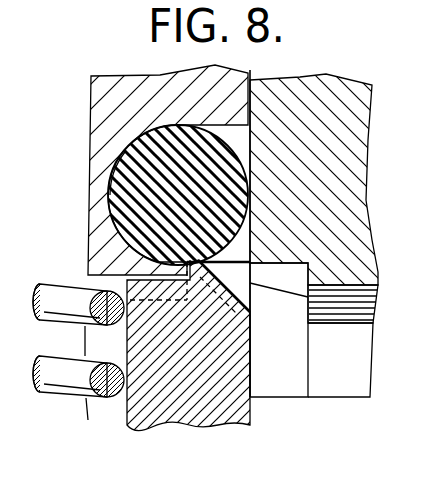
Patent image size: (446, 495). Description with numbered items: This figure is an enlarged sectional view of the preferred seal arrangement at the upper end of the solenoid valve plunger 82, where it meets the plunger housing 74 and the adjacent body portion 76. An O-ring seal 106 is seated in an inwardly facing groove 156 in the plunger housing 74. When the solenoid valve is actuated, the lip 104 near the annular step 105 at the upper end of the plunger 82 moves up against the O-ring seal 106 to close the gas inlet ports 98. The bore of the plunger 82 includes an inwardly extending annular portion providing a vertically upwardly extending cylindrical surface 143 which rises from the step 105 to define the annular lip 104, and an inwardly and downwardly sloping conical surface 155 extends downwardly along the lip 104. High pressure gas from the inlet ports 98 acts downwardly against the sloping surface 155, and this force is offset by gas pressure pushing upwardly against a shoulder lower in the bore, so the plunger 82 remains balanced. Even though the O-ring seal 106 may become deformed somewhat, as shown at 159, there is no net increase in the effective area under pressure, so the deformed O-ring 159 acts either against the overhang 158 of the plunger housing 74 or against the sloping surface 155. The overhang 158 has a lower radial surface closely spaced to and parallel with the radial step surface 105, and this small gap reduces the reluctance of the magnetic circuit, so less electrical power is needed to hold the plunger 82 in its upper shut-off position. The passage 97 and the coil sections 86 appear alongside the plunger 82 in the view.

The plunger housing 74 is at (113, 107).
The side body block 76 is at (362, 120).
The O-ring seal 106 is at (120, 167).
The inwardly facing groove 156 is at (128, 198).
The cylindrical surface 143 is at (200, 260).
The overhang of the plunger housing 158 is at (190, 265).
The annular step 105 is at (185, 263).
The deformed O-ring 159 is at (206, 264).
The lip 104 is at (252, 282).
The sloping conical surface 155 is at (375, 303).
The spring coils 86 is at (60, 393).
The plunger 82 is at (215, 420).
The passage 97 is at (290, 387).
The gas inlet ports 98 is at (342, 392).